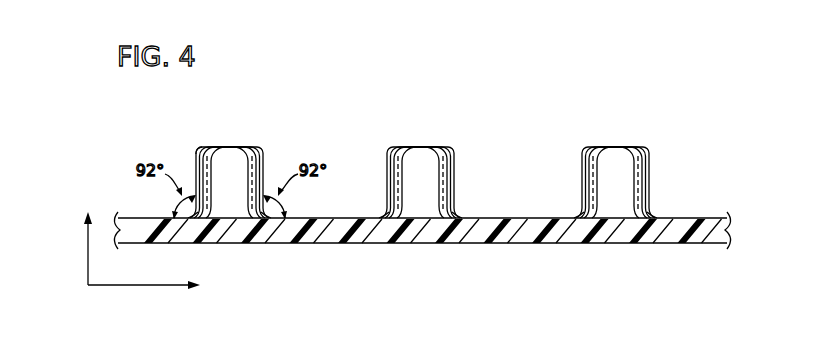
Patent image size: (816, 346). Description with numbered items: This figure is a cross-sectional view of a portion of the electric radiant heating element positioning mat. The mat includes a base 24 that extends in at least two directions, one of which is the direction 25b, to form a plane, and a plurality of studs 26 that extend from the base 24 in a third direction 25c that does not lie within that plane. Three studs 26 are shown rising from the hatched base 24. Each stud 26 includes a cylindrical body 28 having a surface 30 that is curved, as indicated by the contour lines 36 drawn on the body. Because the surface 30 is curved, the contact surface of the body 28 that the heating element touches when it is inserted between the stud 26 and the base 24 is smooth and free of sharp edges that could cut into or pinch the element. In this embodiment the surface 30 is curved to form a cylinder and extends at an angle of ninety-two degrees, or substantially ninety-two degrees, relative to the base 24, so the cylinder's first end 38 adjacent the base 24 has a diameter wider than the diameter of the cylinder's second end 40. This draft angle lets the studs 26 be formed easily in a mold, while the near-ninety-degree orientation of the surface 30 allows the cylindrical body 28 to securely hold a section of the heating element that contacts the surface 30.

The base 24 is at (135, 217).
The second direction 25b is at (147, 285).
The third direction 25c is at (88, 254).
The stud 26 is at (425, 166).
The cylindrical body 28 is at (265, 178).
The surface 30 is at (241, 192).
The contour lines 36 is at (200, 147).
The first end 38 is at (234, 214).
The second end 40 is at (245, 147).